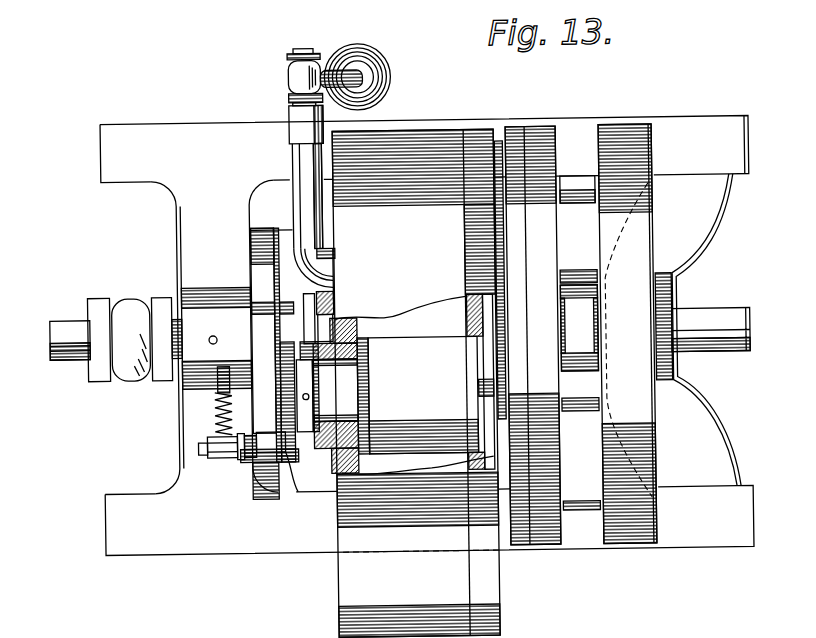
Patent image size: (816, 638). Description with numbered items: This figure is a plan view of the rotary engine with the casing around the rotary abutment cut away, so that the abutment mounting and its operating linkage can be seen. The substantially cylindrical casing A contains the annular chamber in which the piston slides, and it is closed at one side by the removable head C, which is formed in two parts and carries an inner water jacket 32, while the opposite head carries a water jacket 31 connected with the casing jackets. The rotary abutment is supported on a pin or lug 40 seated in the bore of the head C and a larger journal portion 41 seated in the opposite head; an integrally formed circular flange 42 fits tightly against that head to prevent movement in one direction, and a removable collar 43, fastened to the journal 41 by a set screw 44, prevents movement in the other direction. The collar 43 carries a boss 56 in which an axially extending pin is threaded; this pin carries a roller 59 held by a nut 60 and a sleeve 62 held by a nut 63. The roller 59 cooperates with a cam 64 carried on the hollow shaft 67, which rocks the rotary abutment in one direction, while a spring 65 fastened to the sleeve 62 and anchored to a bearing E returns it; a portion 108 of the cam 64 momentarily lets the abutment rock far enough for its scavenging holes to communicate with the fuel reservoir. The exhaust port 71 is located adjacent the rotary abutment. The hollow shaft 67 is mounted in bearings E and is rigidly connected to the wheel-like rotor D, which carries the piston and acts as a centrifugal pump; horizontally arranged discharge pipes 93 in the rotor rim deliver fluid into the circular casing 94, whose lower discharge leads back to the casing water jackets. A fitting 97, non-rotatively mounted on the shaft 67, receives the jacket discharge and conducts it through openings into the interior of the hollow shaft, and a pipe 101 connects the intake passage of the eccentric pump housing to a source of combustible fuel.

The pipe 101 is at (303, 150).
The removable collar 43 is at (302, 335).
The cam 64 is at (251, 235).
The fitting 97 is at (126, 309).
The cam portion 108 is at (264, 329).
The spring 65 is at (214, 405).
The nut 63 is at (199, 446).
The sleeve 62 is at (221, 455).
The nut 60 is at (238, 459).
The roller 59 is at (263, 461).
The boss 56 is at (286, 483).
The water jacket 31 is at (357, 323).
The inner water jacket 32 is at (477, 302).
The circular flange 42 is at (360, 370).
The set screw 44 is at (307, 393).
The journal portion 41 is at (335, 390).
The pin or lug 40 is at (485, 388).
The exhaust port 71 is at (418, 546).
The discharge pipes 93 is at (577, 274).
The circular casing 94 is at (631, 136).
The hollow shaft 67 is at (729, 335).
The casing A is at (416, 383).
The removable head C is at (478, 134).
The rotor D is at (545, 137).
The bearing E is at (673, 303).